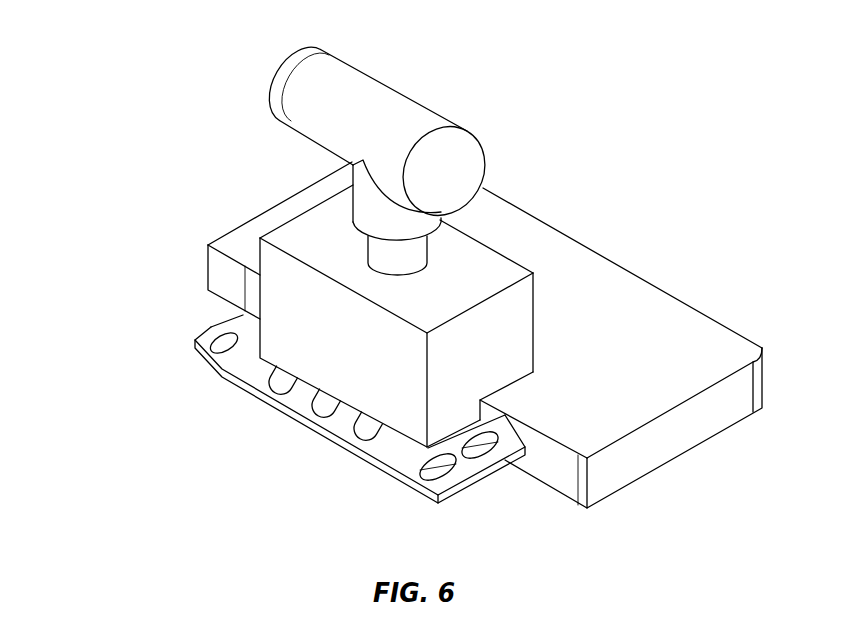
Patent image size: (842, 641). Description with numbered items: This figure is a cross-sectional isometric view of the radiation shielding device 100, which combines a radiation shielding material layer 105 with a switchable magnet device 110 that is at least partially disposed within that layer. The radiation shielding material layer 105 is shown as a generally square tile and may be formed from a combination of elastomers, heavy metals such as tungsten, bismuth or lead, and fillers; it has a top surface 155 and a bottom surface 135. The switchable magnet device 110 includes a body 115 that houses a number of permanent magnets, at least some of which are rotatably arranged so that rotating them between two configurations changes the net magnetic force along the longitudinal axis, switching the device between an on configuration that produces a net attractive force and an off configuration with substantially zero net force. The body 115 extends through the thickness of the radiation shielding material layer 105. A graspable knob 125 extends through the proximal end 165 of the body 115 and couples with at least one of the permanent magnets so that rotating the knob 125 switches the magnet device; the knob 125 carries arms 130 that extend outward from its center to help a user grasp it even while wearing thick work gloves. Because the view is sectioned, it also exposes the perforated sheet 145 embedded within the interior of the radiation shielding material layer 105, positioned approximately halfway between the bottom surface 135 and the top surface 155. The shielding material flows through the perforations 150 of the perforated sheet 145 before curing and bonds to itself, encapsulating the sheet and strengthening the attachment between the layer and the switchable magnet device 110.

The radiation shielding device 100 is at (124, 68).
The radiation shielding material layer 105 is at (208, 282).
The switchable magnet device 110 is at (543, 177).
The body 115 is at (538, 293).
The knob 125 is at (424, 108).
The arms 130 is at (268, 85).
The bottom surface 135 is at (665, 472).
The perforated sheet 145 is at (212, 333).
The perforations 150 is at (365, 432).
The top surface 155 is at (237, 238).
The proximal end 165 is at (480, 262).